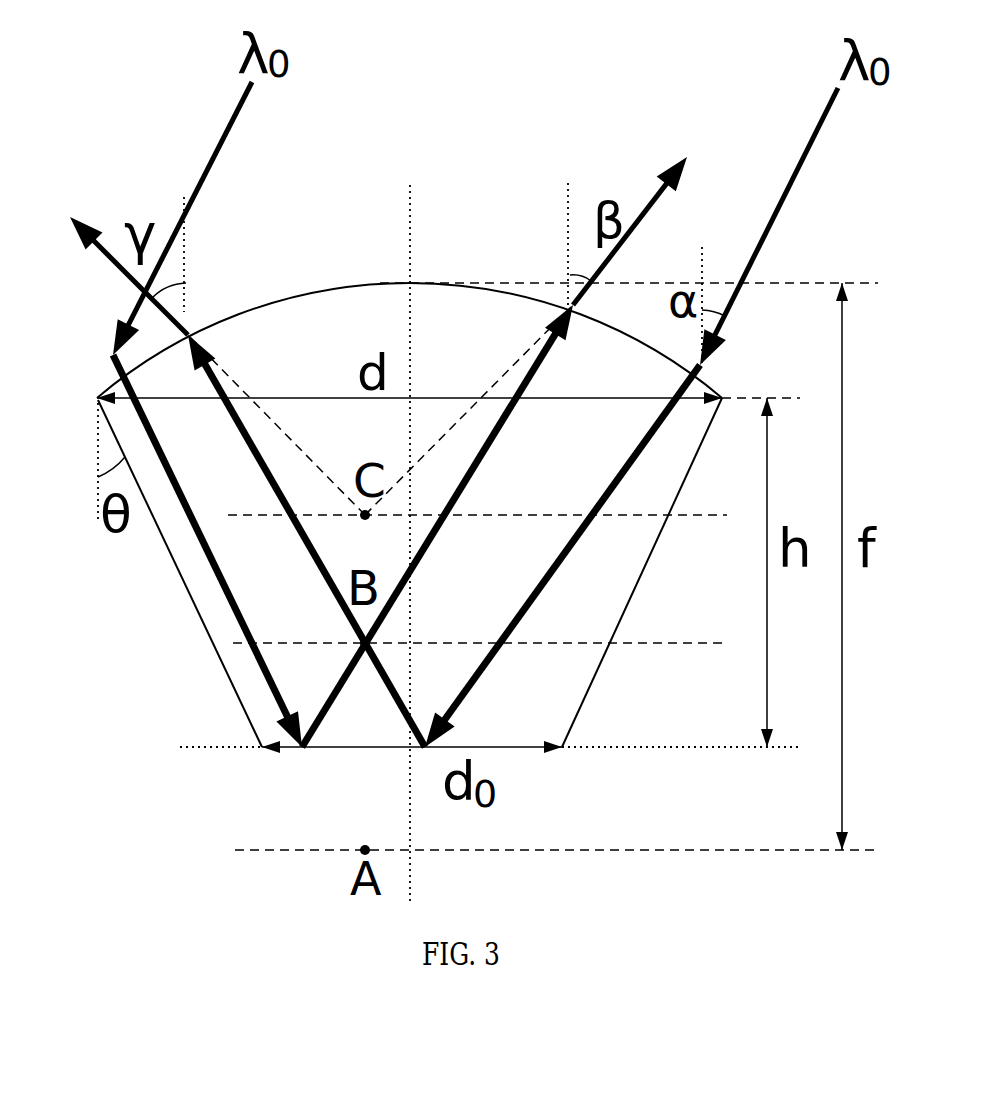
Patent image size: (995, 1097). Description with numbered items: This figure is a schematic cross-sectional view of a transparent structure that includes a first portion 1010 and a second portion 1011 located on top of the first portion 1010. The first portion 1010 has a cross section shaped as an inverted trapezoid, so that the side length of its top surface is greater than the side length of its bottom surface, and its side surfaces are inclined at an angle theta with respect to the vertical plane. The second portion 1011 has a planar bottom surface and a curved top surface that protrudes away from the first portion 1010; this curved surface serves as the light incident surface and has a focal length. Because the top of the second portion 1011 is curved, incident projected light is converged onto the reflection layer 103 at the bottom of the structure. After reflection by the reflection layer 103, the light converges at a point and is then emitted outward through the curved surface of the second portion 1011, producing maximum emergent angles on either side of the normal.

The second portion 1011 is at (305, 322).
The first portion 1010 is at (207, 580).
The reflection layer 103 is at (278, 750).